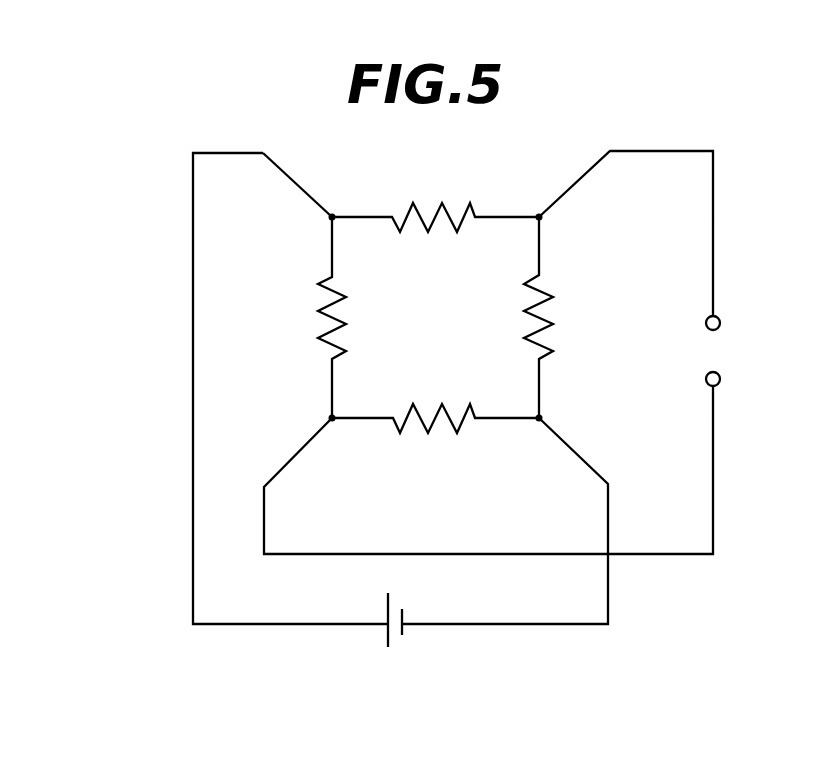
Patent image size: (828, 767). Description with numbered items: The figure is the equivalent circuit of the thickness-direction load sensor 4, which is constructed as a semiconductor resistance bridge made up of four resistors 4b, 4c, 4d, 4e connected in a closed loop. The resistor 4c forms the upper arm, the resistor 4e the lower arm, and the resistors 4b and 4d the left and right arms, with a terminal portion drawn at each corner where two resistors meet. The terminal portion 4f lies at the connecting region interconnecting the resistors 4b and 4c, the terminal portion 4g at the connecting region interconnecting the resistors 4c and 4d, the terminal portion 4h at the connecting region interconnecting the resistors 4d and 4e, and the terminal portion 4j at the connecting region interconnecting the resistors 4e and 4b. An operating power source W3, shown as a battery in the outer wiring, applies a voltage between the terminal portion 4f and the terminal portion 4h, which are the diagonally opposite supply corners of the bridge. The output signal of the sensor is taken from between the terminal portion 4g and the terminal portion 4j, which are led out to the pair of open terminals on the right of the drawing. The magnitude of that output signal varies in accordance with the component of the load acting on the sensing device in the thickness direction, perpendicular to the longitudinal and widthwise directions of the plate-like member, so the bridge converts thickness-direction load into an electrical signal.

The thickness-direction load sensor 4 is at (181, 311).
The resistor 4b is at (309, 317).
The resistor 4c is at (435, 199).
The resistor 4d is at (564, 317).
The resistor 4e is at (435, 437).
The terminal portion 4f is at (333, 215).
The terminal portion 4g is at (542, 220).
The terminal portion 4h is at (537, 421).
The terminal portion 4j is at (330, 417).
The operating power source W3 is at (393, 639).